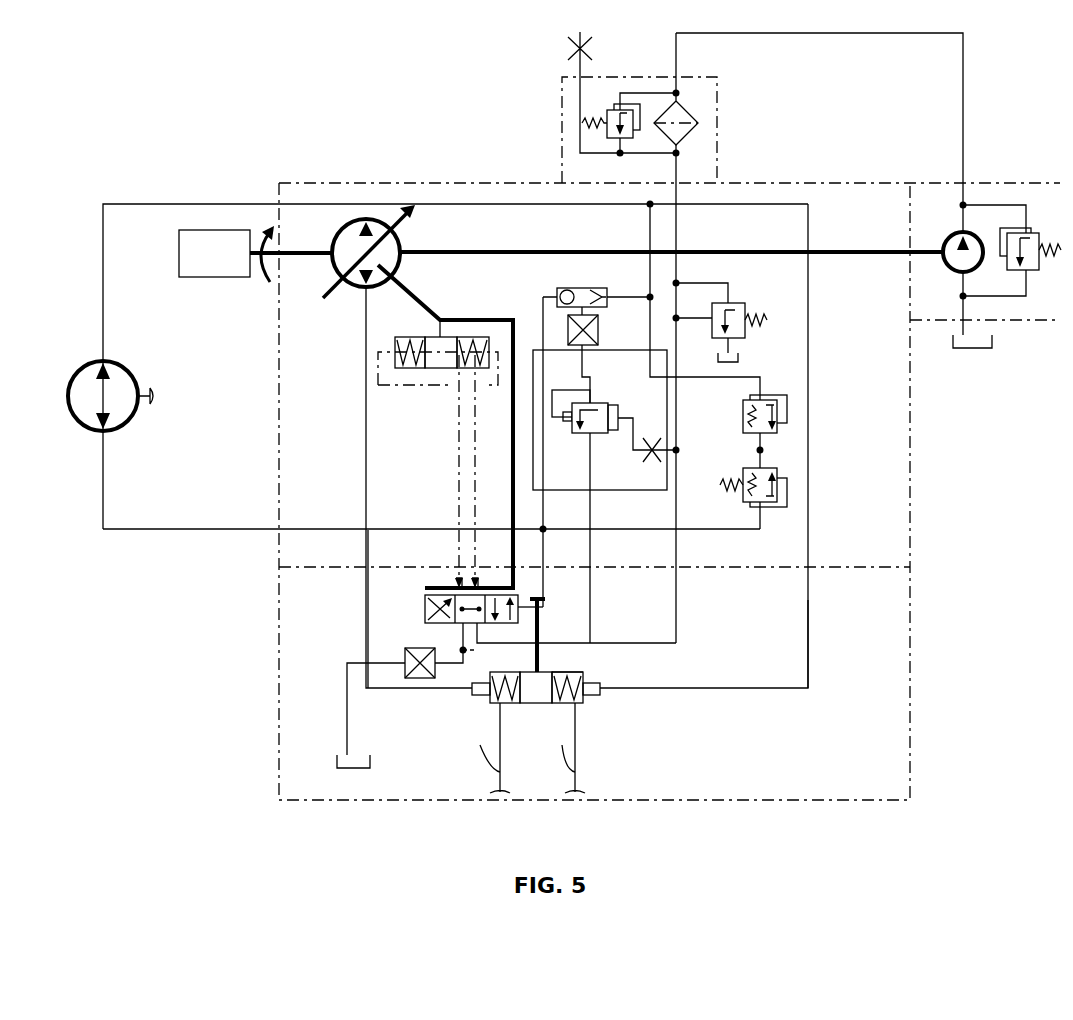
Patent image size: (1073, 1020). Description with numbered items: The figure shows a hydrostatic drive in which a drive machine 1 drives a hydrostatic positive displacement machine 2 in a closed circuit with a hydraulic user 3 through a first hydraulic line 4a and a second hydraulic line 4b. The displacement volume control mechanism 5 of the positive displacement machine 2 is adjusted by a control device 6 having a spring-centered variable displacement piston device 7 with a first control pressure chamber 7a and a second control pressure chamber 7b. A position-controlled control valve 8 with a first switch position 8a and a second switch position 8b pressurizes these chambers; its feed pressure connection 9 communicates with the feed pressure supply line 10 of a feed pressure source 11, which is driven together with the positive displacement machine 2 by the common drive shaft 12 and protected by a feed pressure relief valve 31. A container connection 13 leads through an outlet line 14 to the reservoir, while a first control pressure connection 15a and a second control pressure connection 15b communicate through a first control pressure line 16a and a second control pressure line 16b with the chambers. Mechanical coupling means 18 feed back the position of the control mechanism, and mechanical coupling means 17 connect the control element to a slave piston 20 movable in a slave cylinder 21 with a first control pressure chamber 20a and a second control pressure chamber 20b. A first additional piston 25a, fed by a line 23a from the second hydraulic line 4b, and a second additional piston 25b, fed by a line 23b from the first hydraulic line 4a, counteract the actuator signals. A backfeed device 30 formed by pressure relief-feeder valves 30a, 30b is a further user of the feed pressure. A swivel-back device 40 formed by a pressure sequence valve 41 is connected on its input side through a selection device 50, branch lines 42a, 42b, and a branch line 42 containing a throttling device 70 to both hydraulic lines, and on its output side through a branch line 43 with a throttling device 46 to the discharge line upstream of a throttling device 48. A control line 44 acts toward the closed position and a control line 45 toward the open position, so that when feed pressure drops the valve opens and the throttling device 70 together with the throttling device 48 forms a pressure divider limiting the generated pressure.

The drive machine 1 is at (190, 257).
The hydrostatic positive displacement machine 2 is at (335, 222).
The hydraulic user 3 is at (80, 390).
The first hydraulic line 4a is at (150, 204).
The second hydraulic line 4b is at (138, 529).
The displacement volume control mechanism 5 is at (405, 212).
The control device 6 is at (328, 372).
The spring-centered variable displacement piston device 7 is at (405, 399).
The first control pressure chamber 7a is at (400, 340).
The second control pressure chamber 7b is at (478, 337).
The position-controlled control valve 8 is at (447, 581).
The first switch position 8a is at (425, 600).
The second switch position 8b is at (520, 593).
The feed pressure connection 9 is at (545, 612).
The feed pressure supply line 10 is at (676, 597).
The feed pressure source 11 is at (945, 230).
The common drive shaft 12 is at (840, 250).
The container connection 13 is at (455, 624).
The outlet line 14 is at (345, 712).
The first control pressure connection 15a is at (460, 586).
The second control pressure connection 15b is at (484, 586).
The first control pressure line 16a is at (459, 467).
The second control pressure line 16b is at (475, 437).
The mechanical coupling means 17 is at (522, 597).
The mechanical coupling means 18 is at (513, 410).
The slave piston 20 is at (536, 718).
The first control pressure chamber 20a is at (570, 703).
The second control pressure chamber 20b is at (497, 703).
The slave cylinder 21 is at (570, 672).
The line 23a is at (367, 645).
The line 23b is at (808, 672).
The first additional piston 25a is at (488, 693).
The second additional piston 25b is at (585, 693).
The backfeed device 30 is at (856, 452).
The pressure relief-feeder valve 30a is at (776, 400).
The pressure relief-feeder valve 30b is at (777, 497).
The feed pressure relief valve 31 is at (733, 305).
The swivel-back device 40 is at (616, 386).
The pressure sequence valve 41 is at (600, 433).
The branch line 42 is at (580, 367).
The branch line 42a is at (620, 290).
The branch line 42b is at (560, 325).
The branch line 43 is at (588, 468).
The control line 44 is at (623, 417).
The control line 45 is at (567, 400).
The throttling device 46 is at (648, 460).
The throttling device 48 is at (403, 658).
The selection device 50 is at (573, 285).
The throttling device 70 is at (543, 298).